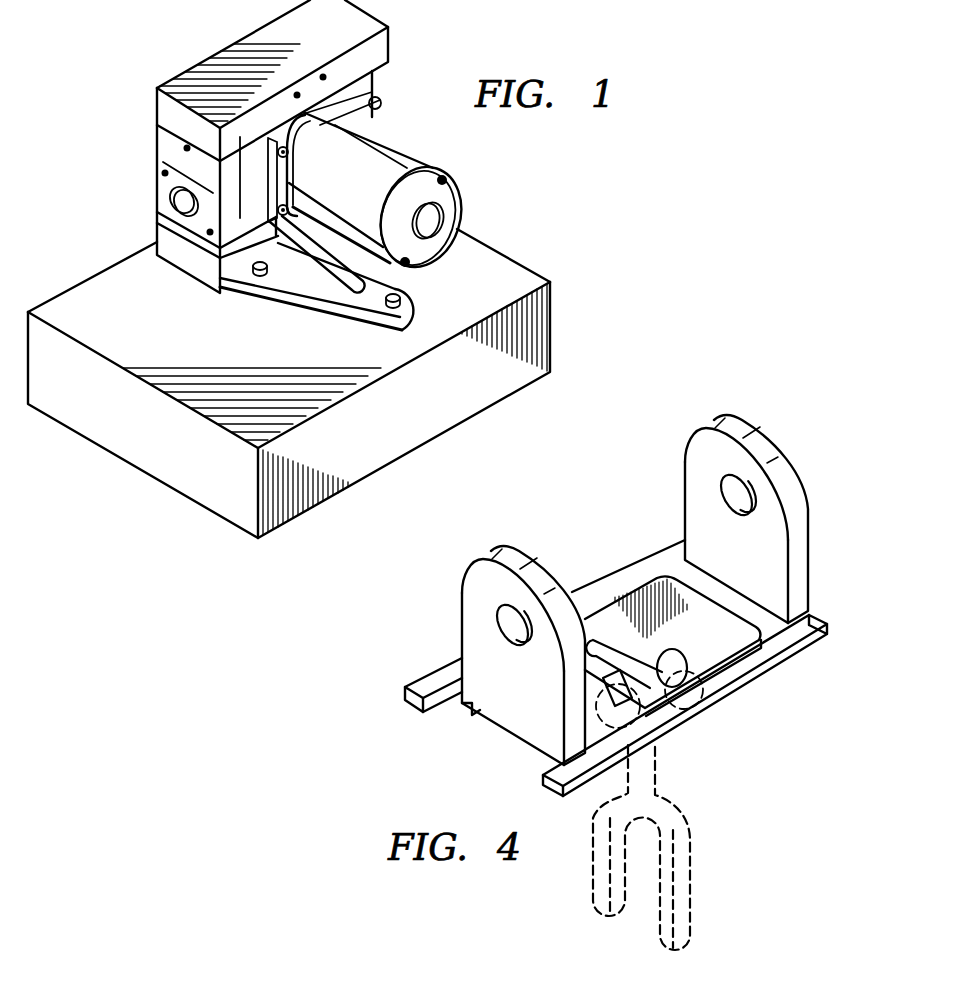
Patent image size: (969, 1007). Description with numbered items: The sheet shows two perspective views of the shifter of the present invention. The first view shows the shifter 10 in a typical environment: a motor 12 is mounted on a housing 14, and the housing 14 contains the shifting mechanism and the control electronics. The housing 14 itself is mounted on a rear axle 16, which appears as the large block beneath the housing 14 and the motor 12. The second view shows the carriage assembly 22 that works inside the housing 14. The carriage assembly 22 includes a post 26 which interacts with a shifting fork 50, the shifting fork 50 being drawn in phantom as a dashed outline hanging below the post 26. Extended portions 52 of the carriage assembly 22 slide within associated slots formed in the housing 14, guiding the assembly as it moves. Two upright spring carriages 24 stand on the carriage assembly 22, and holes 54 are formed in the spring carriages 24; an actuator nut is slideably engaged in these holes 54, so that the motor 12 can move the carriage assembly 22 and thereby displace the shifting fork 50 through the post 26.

In FIG. 1, the shifter 10 is at (99, 98).
In FIG. 1, the motor 12 is at (449, 169).
In FIG. 1, the housing 14 is at (396, 44).
In FIG. 1, the rear axle 16 is at (539, 269).
In FIG. 4, the carriage assembly 22 is at (408, 747).
In FIG. 4, the spring carriages 24 is at (481, 558).
In FIG. 4, the post 26 is at (676, 660).
In FIG. 4, the shifting fork 50 is at (690, 836).
In FIG. 4, the extended portions 52 is at (659, 547).
In FIG. 4, the holes 54 is at (512, 637).